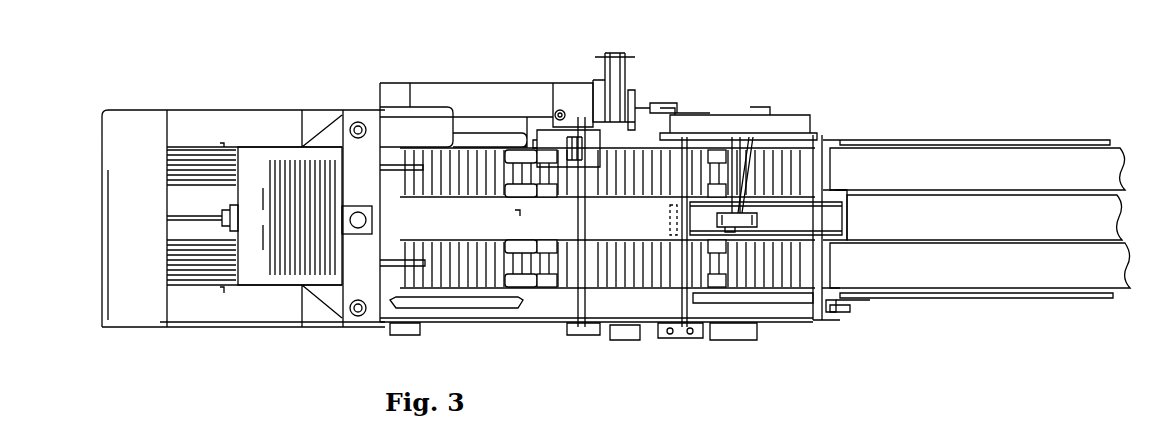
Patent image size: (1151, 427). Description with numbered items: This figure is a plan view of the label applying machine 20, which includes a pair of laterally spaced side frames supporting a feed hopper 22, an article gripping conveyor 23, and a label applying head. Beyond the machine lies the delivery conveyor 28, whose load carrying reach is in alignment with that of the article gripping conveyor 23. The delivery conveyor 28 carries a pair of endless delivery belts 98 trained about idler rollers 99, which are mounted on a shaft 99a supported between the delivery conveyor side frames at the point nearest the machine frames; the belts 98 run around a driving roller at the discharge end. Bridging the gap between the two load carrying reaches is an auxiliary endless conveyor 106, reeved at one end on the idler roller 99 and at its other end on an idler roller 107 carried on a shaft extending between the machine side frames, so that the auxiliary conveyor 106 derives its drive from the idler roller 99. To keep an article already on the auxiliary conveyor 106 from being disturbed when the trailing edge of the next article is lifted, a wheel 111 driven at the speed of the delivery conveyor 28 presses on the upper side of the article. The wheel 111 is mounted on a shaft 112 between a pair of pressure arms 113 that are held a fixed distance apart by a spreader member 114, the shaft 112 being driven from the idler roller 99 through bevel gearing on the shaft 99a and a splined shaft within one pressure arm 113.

The label applying machine 20 is at (678, 92).
The feed hopper 22 is at (250, 130).
The article gripping conveyor 23 is at (477, 245).
The delivery conveyor 28 is at (975, 136).
The endless delivery belts 98 is at (1034, 180).
The idler rollers 99 is at (895, 190).
The shaft 99a is at (832, 312).
The auxiliary endless conveyor 106 is at (807, 215).
The idler roller 107 is at (670, 220).
The wheel 111 is at (758, 219).
The shaft 112 is at (738, 155).
The pressure arms 113 is at (733, 137).
The spreader member 114 is at (675, 299).